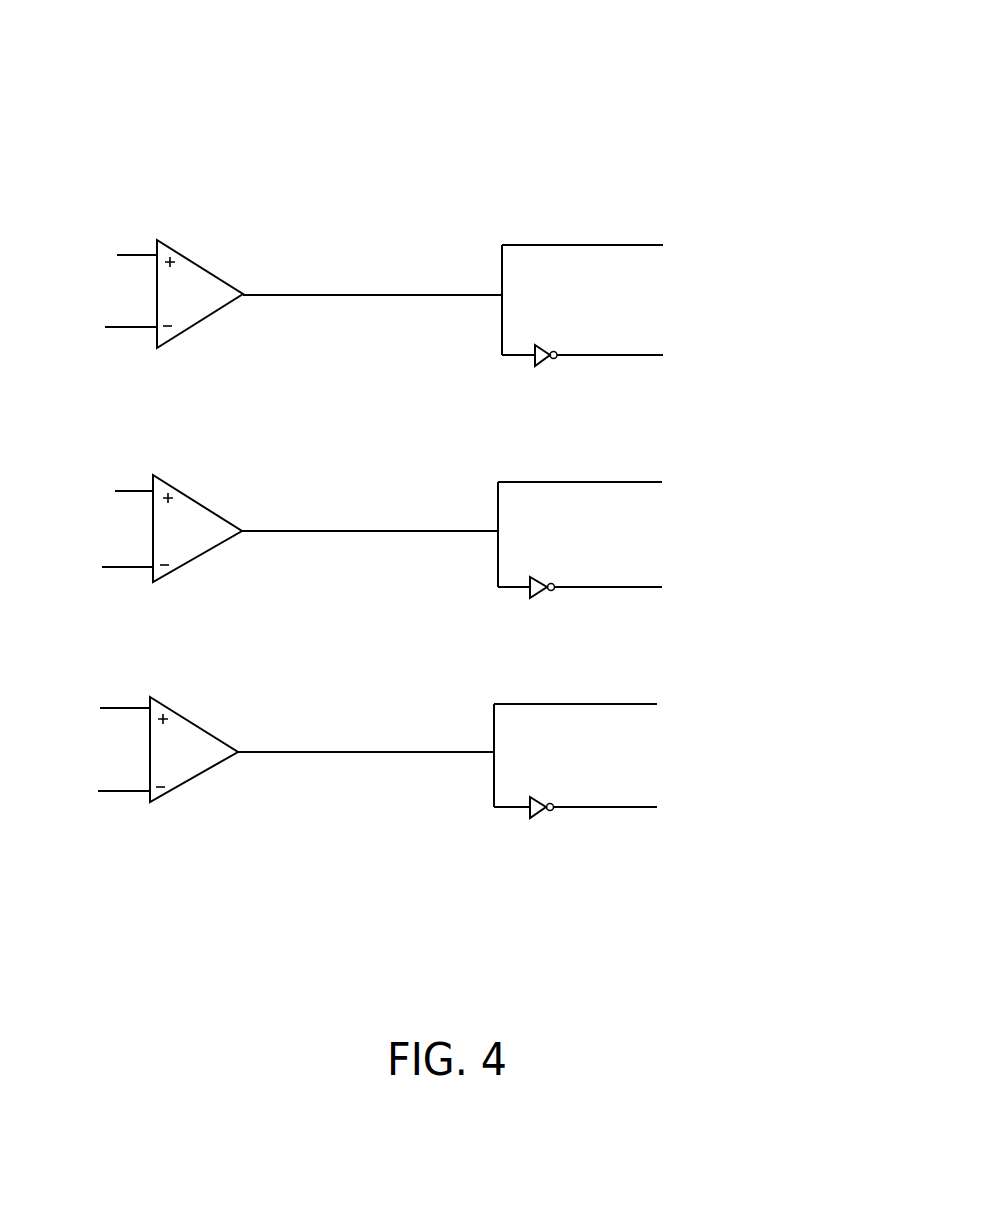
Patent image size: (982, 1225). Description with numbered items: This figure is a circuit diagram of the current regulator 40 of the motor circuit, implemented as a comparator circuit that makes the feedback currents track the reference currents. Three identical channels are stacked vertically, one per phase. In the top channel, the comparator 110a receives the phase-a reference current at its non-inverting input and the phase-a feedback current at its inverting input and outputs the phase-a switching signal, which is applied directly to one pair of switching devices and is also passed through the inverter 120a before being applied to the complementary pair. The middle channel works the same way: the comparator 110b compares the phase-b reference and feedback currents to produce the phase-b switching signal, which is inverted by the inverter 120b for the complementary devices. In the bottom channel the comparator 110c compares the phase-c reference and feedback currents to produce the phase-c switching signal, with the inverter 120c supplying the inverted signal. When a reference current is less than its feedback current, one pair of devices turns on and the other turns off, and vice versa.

The current regulator 40 is at (583, 44).
The comparator 110a is at (200, 266).
The comparator 110b is at (200, 504).
The comparator 110c is at (195, 724).
The inverter 120a is at (543, 346).
The inverter 120b is at (540, 580).
The inverter 120c is at (532, 799).